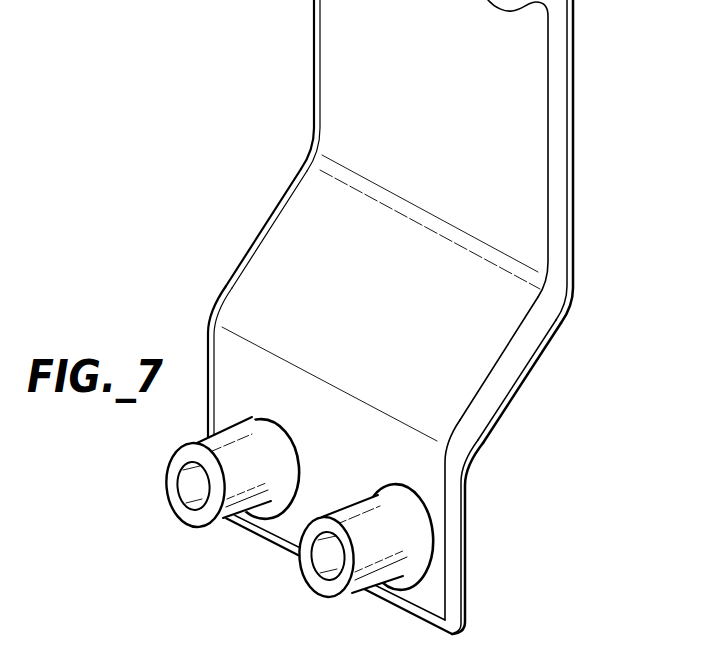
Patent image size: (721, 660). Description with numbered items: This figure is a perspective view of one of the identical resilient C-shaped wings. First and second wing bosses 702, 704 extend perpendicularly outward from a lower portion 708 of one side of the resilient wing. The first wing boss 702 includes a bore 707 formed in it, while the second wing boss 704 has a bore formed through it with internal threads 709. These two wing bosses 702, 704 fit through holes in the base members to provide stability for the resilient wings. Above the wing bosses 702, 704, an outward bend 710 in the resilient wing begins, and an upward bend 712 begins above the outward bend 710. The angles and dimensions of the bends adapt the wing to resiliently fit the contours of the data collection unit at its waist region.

The first wing boss 702 is at (171, 455).
The second wing boss 704 is at (330, 594).
The bore 707 is at (188, 498).
The internal threads 709 is at (327, 571).
The lower portion 708 is at (467, 583).
The outward bend 710 is at (472, 462).
The upward bend 712 is at (566, 300).